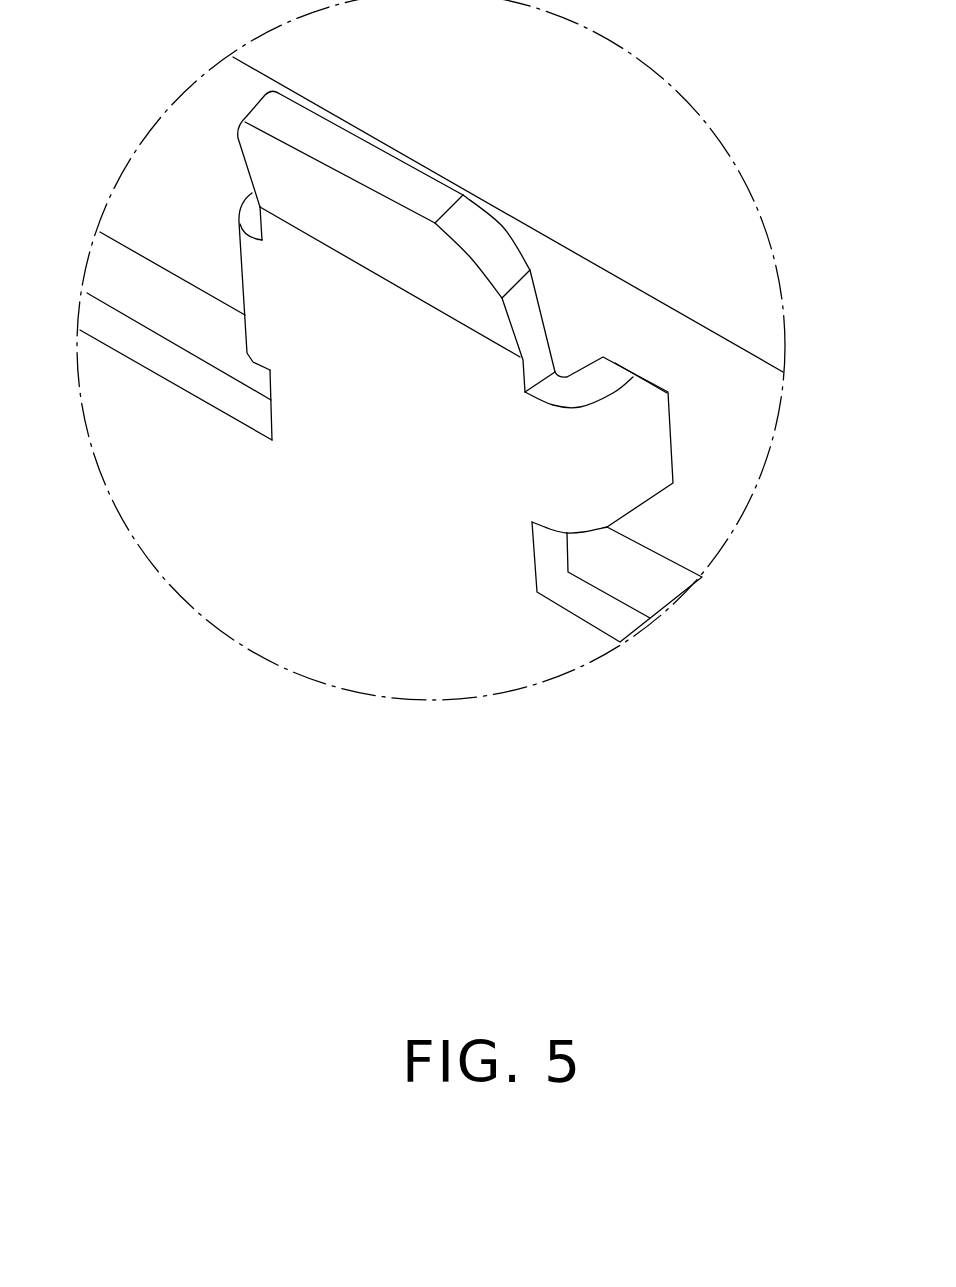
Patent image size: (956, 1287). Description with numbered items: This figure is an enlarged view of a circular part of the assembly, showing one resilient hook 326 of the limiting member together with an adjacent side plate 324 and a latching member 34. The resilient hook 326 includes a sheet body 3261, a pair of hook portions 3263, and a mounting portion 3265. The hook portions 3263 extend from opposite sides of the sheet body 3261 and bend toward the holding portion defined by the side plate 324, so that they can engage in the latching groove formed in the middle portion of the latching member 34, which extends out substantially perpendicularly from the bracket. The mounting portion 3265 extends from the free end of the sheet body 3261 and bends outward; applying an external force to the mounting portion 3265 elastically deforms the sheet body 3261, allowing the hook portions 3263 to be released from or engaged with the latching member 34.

The latching member 34 is at (713, 463).
The side plate 324 is at (593, 610).
The resilient hook 326 is at (397, 473).
The sheet body 3261 is at (430, 385).
The hook portion 3263 is at (568, 462).
The mounting portion 3265 is at (383, 235).